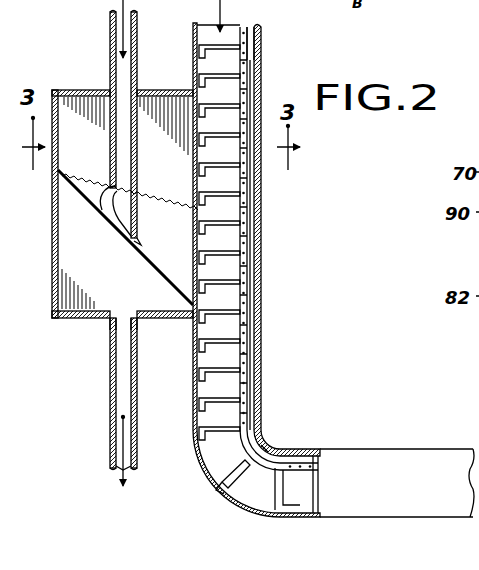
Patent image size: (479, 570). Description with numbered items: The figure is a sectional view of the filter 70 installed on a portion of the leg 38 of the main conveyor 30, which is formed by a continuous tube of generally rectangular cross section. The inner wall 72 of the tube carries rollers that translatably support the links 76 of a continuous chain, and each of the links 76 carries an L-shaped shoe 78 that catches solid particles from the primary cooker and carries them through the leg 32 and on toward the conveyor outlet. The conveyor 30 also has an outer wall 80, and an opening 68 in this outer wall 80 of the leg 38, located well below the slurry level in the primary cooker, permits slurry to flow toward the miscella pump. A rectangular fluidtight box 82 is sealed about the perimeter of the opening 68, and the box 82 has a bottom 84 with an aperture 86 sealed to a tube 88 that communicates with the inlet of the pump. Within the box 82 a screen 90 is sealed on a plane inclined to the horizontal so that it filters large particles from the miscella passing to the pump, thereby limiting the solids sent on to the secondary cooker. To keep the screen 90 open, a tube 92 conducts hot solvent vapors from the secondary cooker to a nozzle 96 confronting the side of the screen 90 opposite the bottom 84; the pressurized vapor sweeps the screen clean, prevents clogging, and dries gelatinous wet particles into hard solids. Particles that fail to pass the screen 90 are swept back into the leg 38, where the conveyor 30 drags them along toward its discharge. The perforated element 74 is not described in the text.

The conveyor 30 is at (235, 258).
The leg 32 is at (385, 449).
The leg 38 is at (262, 52).
The opening 68 is at (197, 237).
The filter 70 is at (86, 90).
The inner wall 72 is at (262, 272).
The perforated strip 74 is at (262, 320).
The links 76 is at (258, 350).
The L-shaped shoe 78 is at (215, 352).
The outer wall 80 is at (193, 33).
The fluidtight box 82 is at (52, 257).
The bottom 84 is at (80, 318).
The aperture 86 is at (125, 311).
The tube 88 is at (110, 398).
The screen 90 is at (72, 186).
The tube 92 is at (110, 22).
The nozzle 96 is at (138, 210).